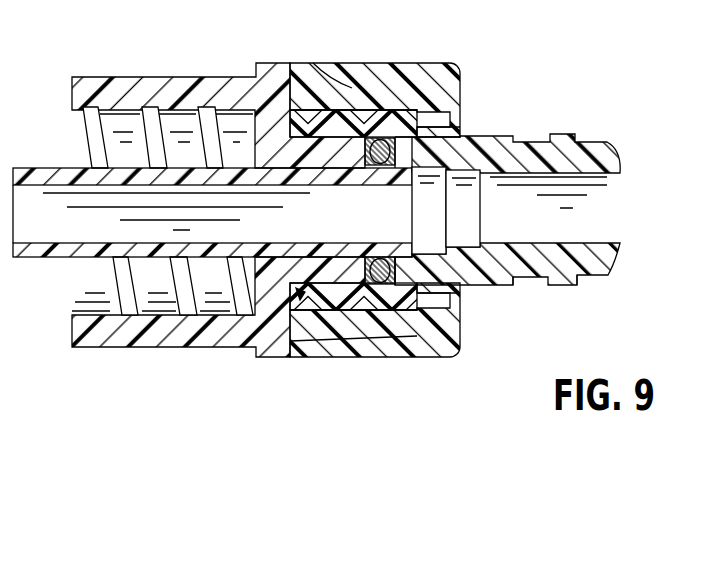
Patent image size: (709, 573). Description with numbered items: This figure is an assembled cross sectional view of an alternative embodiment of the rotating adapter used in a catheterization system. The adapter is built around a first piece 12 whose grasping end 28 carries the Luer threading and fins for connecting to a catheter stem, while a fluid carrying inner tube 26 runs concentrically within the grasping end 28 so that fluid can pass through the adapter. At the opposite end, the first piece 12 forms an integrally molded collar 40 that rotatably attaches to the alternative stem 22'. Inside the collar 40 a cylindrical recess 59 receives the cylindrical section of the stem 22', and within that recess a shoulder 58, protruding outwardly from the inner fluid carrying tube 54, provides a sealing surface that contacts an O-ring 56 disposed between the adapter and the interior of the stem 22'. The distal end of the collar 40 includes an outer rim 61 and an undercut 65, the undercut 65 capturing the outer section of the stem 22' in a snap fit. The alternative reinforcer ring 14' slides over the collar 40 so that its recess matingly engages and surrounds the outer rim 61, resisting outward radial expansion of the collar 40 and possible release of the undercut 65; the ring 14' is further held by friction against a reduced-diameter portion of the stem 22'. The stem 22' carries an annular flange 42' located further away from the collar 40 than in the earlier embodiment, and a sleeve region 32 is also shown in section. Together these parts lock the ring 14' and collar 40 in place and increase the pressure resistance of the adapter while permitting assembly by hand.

The first piece 12 is at (178, 78).
The grasping end 28 is at (89, 77).
The fluid carrying inner tube 26 is at (35, 173).
The reinforcer ring 14' is at (387, 206).
The sleeve 32 is at (313, 62).
The collar 40 is at (360, 90).
The outer rim 61 is at (287, 115).
The O-ring 56 is at (387, 167).
The shoulder 58 is at (368, 253).
The stem 22' is at (528, 182).
The annular flange 42' is at (565, 303).
The inner fluid carrying tube 54 is at (430, 243).
The undercut 65 is at (452, 186).
The cylindrical recess 59 is at (301, 300).